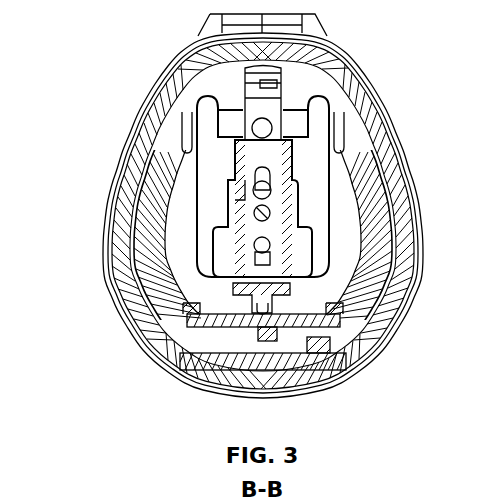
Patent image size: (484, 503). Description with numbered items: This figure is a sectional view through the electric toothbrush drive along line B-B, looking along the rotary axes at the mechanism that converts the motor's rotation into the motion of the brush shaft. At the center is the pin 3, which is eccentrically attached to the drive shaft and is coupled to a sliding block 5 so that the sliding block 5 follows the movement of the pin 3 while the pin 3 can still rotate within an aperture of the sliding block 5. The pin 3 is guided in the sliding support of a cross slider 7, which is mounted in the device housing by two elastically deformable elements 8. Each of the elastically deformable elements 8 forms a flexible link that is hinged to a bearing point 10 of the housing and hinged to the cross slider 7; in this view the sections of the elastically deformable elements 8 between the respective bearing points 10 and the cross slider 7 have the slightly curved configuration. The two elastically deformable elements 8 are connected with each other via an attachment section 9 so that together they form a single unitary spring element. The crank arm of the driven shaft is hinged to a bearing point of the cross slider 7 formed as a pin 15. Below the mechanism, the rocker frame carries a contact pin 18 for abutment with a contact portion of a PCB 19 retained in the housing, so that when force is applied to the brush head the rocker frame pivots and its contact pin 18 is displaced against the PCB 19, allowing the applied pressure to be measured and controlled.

The pin 3 is at (262, 217).
The sliding block 5 is at (252, 213).
The cross slider 7 is at (233, 197).
The elastically deformable elements 8 is at (192, 173).
The attachment section 9 is at (230, 277).
The bearing point 10 is at (197, 102).
The pin 15 is at (258, 247).
The contact pin 18 is at (262, 335).
The PCB 19 is at (255, 338).